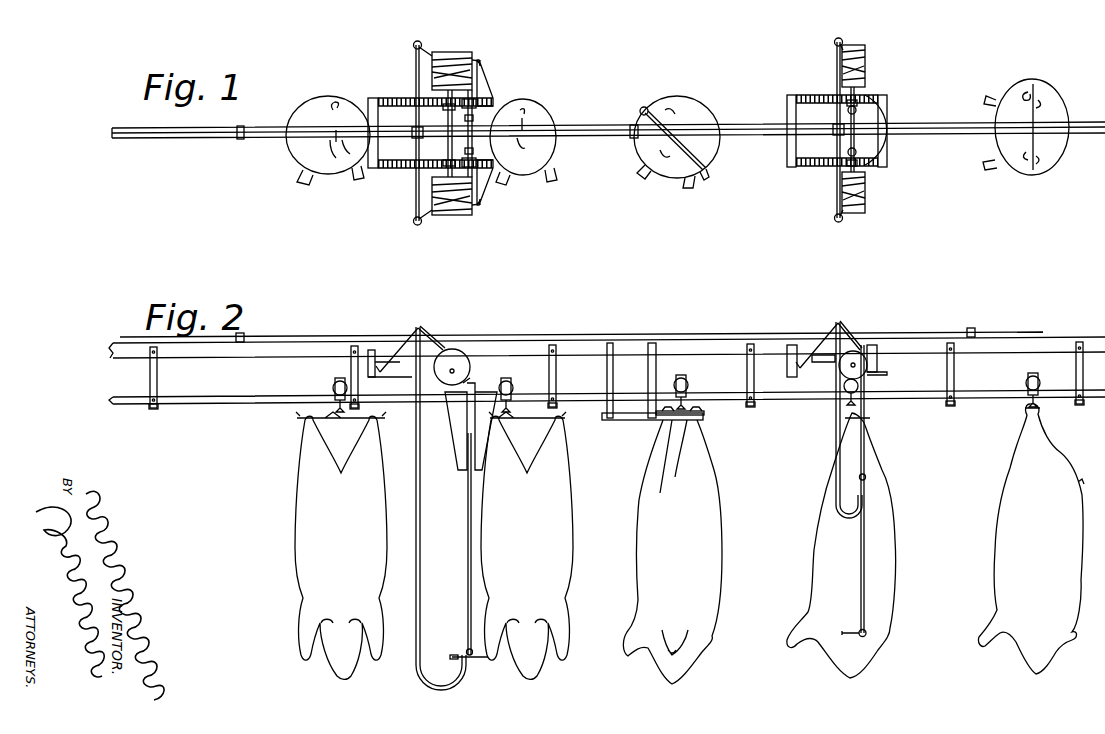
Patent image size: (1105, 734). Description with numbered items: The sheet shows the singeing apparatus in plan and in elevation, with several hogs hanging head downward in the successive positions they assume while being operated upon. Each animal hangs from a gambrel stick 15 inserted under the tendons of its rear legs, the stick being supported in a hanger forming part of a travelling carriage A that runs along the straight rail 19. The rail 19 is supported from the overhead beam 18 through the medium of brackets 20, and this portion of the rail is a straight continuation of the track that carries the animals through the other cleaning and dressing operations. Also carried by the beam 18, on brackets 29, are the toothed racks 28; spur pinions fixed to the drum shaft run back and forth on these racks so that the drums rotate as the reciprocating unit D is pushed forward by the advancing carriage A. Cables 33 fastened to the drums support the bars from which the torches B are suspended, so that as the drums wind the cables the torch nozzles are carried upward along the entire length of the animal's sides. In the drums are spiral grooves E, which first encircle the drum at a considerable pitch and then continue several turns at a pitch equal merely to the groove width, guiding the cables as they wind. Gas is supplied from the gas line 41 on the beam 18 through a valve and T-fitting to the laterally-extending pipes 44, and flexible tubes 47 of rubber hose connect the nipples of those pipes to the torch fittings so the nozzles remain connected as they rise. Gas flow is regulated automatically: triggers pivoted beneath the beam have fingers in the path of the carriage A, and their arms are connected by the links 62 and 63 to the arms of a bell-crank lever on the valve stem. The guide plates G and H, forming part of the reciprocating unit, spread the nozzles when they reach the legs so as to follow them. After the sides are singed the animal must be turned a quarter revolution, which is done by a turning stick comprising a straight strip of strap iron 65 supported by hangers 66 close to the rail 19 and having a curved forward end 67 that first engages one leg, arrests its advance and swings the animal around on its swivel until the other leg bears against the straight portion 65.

In FIG. 1, the beam 18 is at (208, 141).
In FIG. 2, the beam 18 is at (609, 348).
In FIG. 2, the rail 19 is at (215, 405).
In FIG. 2, the brackets 20 is at (158, 380).
In FIG. 1, the racks 28 is at (410, 98).
In FIG. 2, the racks 28 is at (792, 378).
In FIG. 2, the brackets 29 is at (878, 360).
In FIG. 2, the cables 33 is at (473, 563).
In FIG. 1, the gas line 41 is at (583, 128).
In FIG. 2, the gas line 41 is at (551, 337).
In FIG. 1, the laterally-extending pipes 44 is at (414, 67).
In FIG. 2, the flexible tubes 47 is at (421, 517).
In FIG. 2, the link 62 is at (443, 347).
In FIG. 2, the link 63 is at (398, 345).
In FIG. 2, the strip of strap iron 65 is at (630, 421).
In FIG. 2, the hangers 66 is at (655, 376).
In FIG. 1, the curved portion 67 is at (708, 165).
In FIG. 2, the curved portion 67 is at (705, 416).
In FIG. 2, the gambrel stick 15 is at (300, 420).
In FIG. 2, the travelling carriage A is at (334, 380).
In FIG. 2, the torches B is at (866, 569).
In FIG. 1, the reciprocating unit D is at (452, 50).
In FIG. 2, the reciprocating unit D is at (868, 372).
In FIG. 1, the spiral grooves E is at (462, 215).
In FIG. 1, the guide plate G is at (491, 84).
In FIG. 1, the guide plate H is at (489, 178).
In FIG. 2, the guide plate H is at (455, 432).
In FIG. 1, the hog carcass M is at (338, 162).
In FIG. 2, the hog carcass M is at (367, 537).